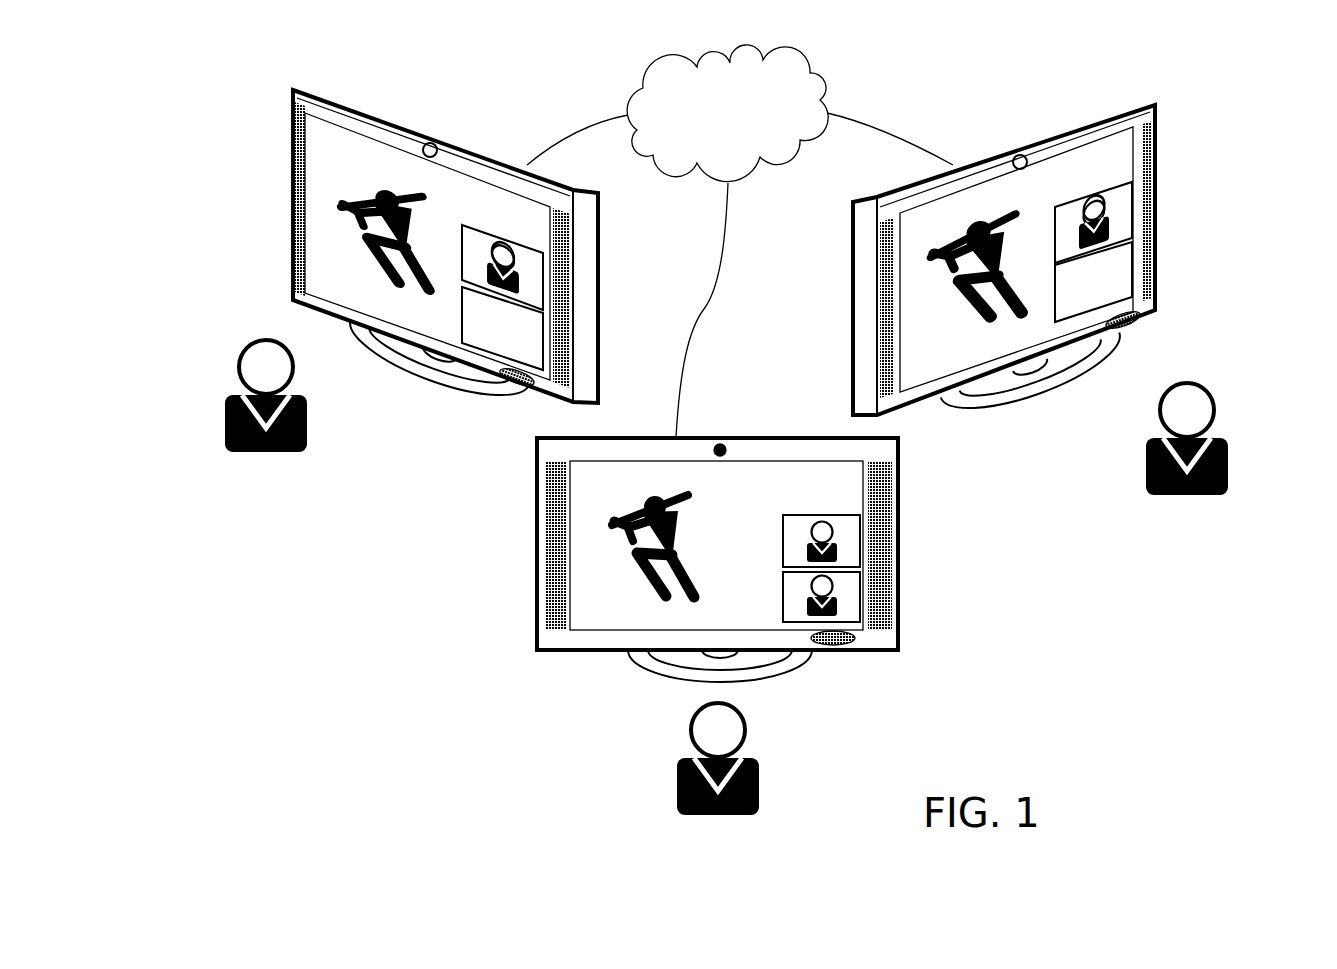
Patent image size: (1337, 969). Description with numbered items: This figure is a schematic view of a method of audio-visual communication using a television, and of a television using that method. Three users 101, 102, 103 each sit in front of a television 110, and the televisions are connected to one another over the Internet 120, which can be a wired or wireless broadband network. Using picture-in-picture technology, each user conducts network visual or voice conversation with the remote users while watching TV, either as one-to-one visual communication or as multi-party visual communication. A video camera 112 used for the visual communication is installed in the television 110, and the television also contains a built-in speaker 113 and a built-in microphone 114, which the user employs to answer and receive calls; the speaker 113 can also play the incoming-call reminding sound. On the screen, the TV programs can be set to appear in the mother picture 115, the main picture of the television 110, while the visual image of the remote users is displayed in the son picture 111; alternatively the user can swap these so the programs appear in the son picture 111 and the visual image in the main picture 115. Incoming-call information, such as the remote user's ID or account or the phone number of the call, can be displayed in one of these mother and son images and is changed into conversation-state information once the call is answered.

The user 101 is at (678, 790).
The user 102 is at (225, 427).
The user 103 is at (1226, 461).
The television 110 is at (543, 617).
The son picture 111 is at (862, 597).
The video camera 112 is at (725, 441).
The speaker 113 is at (560, 495).
The microphone 114 is at (855, 638).
The mother picture 115 is at (593, 560).
The Internet 120 is at (757, 146).